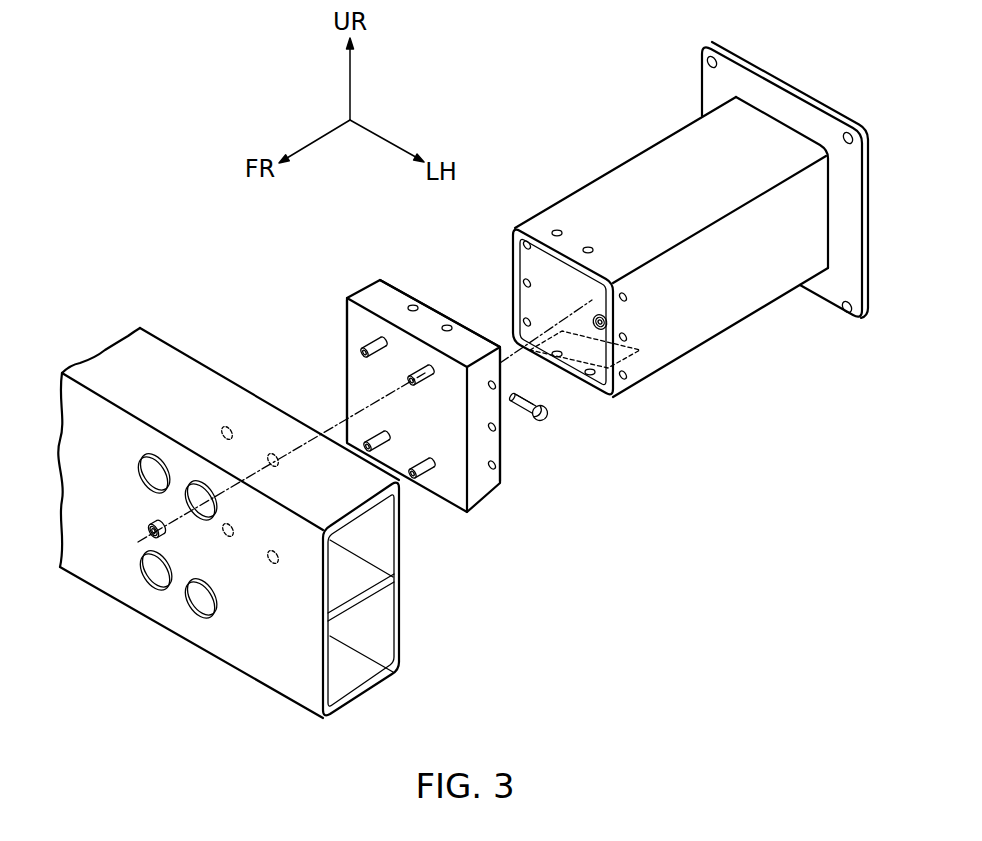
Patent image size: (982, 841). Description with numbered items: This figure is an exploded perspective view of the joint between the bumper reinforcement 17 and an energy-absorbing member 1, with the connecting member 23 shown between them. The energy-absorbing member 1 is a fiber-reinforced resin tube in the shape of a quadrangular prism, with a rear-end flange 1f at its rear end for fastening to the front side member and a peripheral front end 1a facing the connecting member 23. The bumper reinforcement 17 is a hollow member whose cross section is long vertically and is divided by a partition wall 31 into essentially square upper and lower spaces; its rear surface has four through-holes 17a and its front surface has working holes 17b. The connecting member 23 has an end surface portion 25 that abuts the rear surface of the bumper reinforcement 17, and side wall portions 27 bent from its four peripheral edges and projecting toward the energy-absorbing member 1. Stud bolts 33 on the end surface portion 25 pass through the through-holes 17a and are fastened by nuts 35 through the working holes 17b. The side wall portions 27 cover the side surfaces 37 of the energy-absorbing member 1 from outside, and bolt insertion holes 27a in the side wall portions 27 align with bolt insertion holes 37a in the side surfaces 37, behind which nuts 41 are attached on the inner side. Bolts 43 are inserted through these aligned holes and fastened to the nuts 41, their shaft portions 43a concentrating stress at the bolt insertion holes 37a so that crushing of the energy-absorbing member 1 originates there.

The energy-absorbing member 1 is at (644, 146).
The peripheral front end 1a is at (511, 272).
The rear-end flange 1f is at (829, 302).
The bumper reinforcement 17 is at (173, 346).
The through-holes 17a is at (273, 453).
The working holes 17b is at (143, 478).
The connecting member 23 is at (361, 281).
The end surface portion 25 is at (443, 480).
The side wall portions 27 is at (387, 291).
The bolt insertion holes 27a is at (450, 324).
The partition wall 31 is at (360, 603).
The stud bolts 33 is at (409, 379).
The nuts 35 is at (187, 500).
The side surfaces 37 is at (702, 245).
The bolt insertion holes 37a is at (588, 246).
The nuts 41 is at (598, 330).
The bolts 43 is at (546, 421).
The shaft portions 43a is at (522, 399).